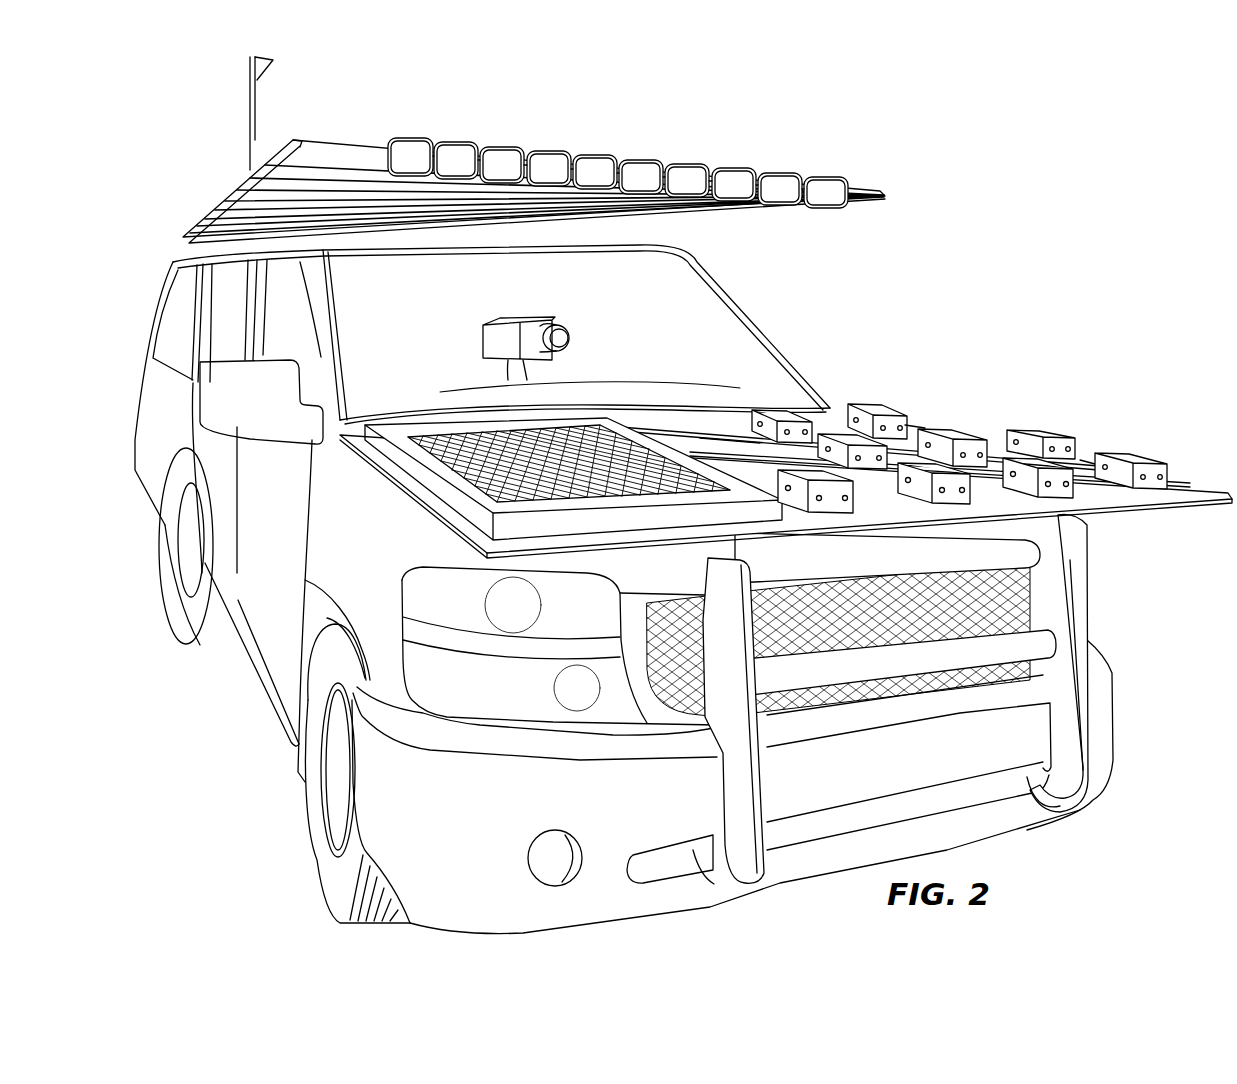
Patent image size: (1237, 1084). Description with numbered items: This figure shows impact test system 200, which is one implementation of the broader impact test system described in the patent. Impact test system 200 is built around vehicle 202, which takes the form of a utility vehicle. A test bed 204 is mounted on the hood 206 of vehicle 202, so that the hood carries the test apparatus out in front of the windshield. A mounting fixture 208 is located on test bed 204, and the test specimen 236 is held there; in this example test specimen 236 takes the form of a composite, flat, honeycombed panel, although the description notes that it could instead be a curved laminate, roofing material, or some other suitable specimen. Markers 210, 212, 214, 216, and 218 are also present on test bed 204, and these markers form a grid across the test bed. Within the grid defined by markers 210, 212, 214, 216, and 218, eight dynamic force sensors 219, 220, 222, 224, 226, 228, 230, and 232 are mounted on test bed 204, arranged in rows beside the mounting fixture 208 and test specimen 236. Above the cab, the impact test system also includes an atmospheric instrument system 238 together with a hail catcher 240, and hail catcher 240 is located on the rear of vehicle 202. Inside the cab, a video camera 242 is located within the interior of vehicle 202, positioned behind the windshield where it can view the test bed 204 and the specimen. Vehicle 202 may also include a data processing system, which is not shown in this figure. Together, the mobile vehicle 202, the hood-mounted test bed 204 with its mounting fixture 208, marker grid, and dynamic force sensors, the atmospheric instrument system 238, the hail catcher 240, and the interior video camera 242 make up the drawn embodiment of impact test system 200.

The impact test system 200 is at (962, 185).
The vehicle 202 is at (247, 675).
The test bed 204 is at (1187, 493).
The hood 206 is at (735, 788).
The mounting fixture 208 is at (443, 488).
The marker 210 is at (735, 432).
The marker 212 is at (857, 440).
The marker 214 is at (915, 427).
The marker 216 is at (995, 437).
The marker 218 is at (1087, 463).
The dynamic force sensor 219 is at (782, 413).
The dynamic force sensor 220 is at (877, 412).
The dynamic force sensor 222 is at (1047, 433).
The dynamic force sensor 224 is at (830, 515).
The dynamic force sensor 226 is at (955, 505).
The dynamic force sensor 228 is at (955, 430).
The dynamic force sensor 230 is at (1080, 490).
The dynamic force sensor 232 is at (1137, 457).
The test specimen 236 is at (533, 476).
The atmospheric instrument system 238 is at (218, 206).
The hail catcher 240 is at (275, 66).
The video camera 242 is at (483, 340).